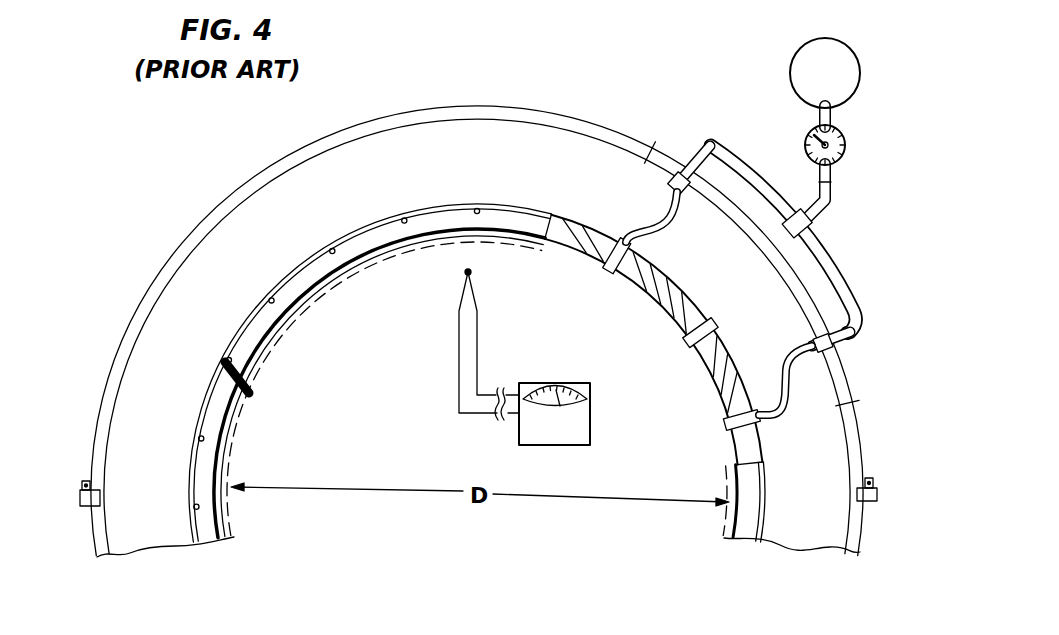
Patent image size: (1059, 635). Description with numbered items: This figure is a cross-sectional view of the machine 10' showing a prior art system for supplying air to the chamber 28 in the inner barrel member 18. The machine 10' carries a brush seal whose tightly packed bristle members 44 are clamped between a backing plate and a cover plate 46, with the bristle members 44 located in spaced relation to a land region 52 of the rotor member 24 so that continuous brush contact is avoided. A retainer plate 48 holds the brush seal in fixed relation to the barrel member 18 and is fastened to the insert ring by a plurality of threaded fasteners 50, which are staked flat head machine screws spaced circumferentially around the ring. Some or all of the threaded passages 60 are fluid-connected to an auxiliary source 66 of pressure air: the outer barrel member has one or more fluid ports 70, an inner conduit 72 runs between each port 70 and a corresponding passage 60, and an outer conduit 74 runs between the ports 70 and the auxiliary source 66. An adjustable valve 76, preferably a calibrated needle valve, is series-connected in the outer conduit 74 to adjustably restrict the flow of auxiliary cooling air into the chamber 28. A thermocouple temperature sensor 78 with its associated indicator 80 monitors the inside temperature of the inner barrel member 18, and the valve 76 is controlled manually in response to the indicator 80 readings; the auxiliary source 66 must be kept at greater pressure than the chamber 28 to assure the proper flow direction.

The machine 10' is at (478, 343).
The barrel member 18 is at (658, 340).
The rotor member 24 is at (222, 425).
The chamber 28 is at (654, 457).
The bristle members 44 is at (268, 357).
The cover plate 46 is at (374, 258).
The retainer plate 48 is at (385, 240).
The threaded fasteners 50 is at (270, 298).
The land region 52 is at (232, 386).
The passages 60 is at (612, 270).
The auxiliary source 66 is at (792, 87).
The fluid ports 70 is at (677, 172).
The inner conduit 72 is at (677, 225).
The outer conduit 74 is at (766, 176).
The adjustable valve 76 is at (848, 148).
The thermocouple temperature sensor 78 is at (473, 292).
The indicator 80 is at (548, 382).